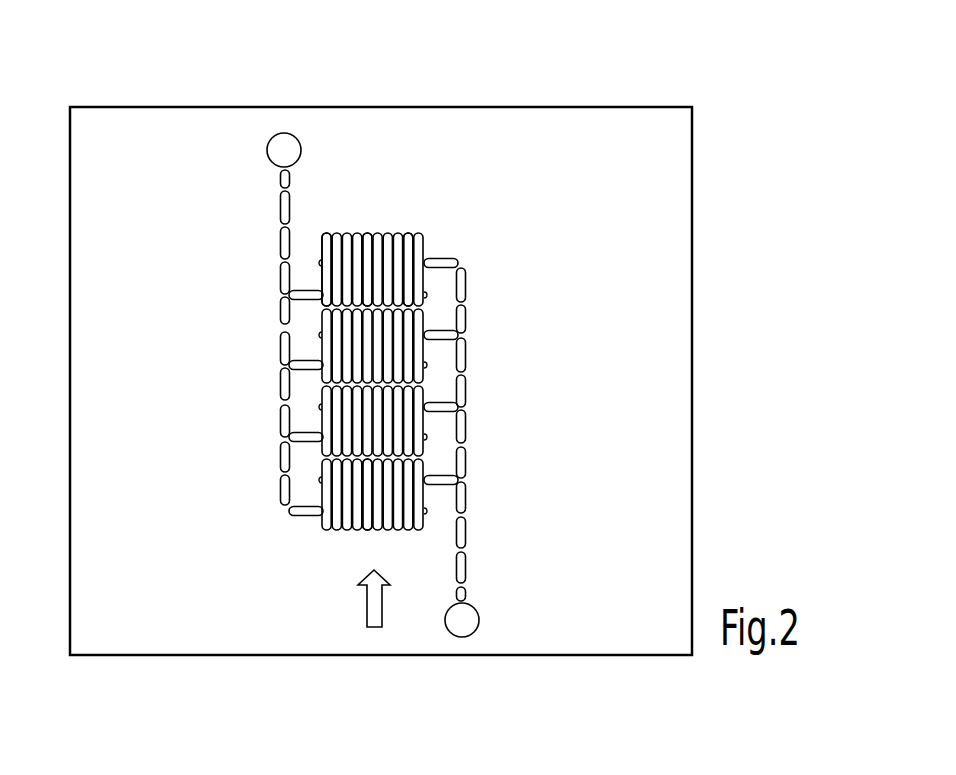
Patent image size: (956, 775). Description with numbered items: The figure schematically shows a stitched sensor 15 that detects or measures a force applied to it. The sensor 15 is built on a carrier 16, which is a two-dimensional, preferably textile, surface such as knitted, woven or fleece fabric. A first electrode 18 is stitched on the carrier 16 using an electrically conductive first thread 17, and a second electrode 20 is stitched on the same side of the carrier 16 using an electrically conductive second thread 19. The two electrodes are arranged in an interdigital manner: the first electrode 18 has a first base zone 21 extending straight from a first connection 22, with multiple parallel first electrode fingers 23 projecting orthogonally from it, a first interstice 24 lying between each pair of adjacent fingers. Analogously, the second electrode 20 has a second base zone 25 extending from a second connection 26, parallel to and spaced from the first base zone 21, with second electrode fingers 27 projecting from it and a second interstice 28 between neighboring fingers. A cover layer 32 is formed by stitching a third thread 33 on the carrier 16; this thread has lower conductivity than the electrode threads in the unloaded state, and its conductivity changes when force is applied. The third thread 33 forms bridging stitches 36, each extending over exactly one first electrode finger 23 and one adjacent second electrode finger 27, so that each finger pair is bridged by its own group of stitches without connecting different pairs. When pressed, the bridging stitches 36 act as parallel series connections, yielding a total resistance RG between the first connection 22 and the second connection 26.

The sensor 15 is at (698, 183).
The carrier 16 is at (678, 308).
The first thread 17 is at (281, 230).
The first electrode 18 is at (267, 128).
The second thread 19 is at (465, 503).
The second electrode 20 is at (478, 546).
The first base zone 21 is at (283, 514).
The first connection 22 is at (284, 150).
The first electrode fingers 23 is at (308, 375).
The first interstice 24 is at (303, 318).
The second base zone 25 is at (467, 257).
The second connection 26 is at (467, 625).
The second electrode fingers 27 is at (445, 343).
The second interstice 28 is at (443, 299).
The cover layer 32 is at (427, 213).
The third thread 33 is at (325, 233).
The bridging stitches 36 is at (373, 237).
The total resistance RG is at (370, 600).